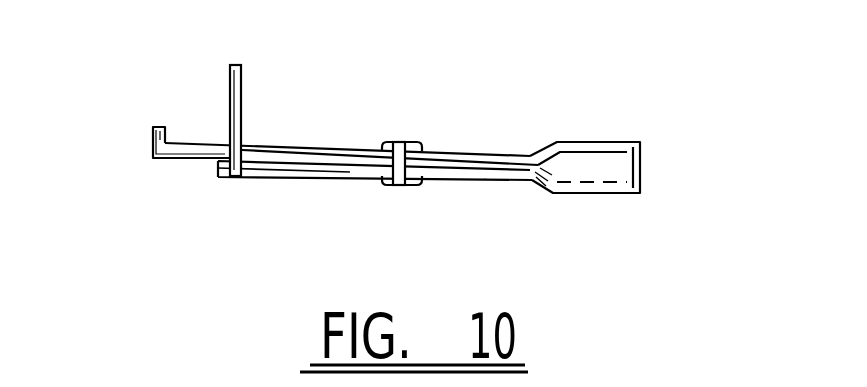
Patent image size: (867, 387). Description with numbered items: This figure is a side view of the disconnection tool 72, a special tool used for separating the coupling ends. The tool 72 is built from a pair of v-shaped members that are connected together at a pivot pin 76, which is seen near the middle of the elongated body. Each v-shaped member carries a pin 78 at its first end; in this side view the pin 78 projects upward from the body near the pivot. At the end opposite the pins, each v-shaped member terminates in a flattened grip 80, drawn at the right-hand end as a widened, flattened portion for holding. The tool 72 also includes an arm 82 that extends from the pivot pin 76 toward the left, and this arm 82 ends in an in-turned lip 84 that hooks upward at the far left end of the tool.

The tool 72 is at (485, 178).
The pivot pin 76 is at (400, 142).
The pin 78 is at (243, 105).
The flattened grip 80 is at (610, 173).
The arm 82 is at (200, 160).
The in-turned lip 84 is at (155, 130).